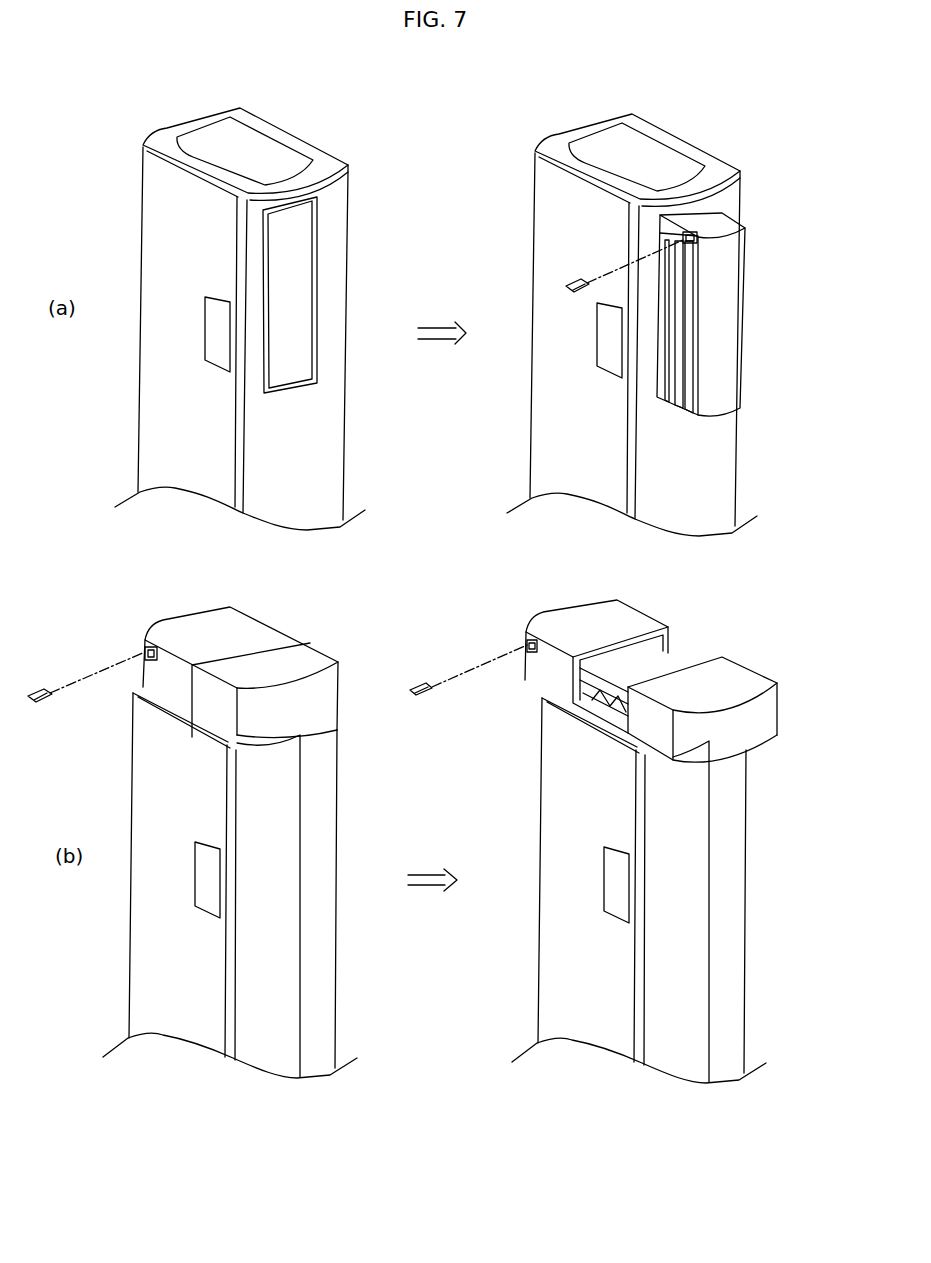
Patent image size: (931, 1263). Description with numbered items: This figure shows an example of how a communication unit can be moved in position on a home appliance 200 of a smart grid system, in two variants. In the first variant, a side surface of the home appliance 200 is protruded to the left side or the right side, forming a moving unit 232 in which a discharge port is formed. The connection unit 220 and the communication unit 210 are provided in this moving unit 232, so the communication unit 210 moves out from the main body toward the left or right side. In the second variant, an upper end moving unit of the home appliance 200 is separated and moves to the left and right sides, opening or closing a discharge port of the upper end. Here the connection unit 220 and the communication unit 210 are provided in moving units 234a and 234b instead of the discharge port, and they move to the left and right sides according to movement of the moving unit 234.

The air conditioner 200 is at (355, 263).
The moving unit 232 is at (317, 213).
The connection unit 220 is at (434, 435).
The communication unit 210 is at (697, 233).
The moving unit 234 is at (310, 643).
The moving unit 234a is at (645, 609).
The moving unit 234b is at (740, 656).